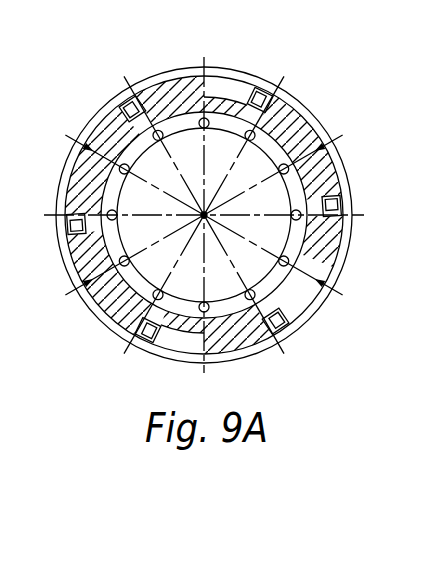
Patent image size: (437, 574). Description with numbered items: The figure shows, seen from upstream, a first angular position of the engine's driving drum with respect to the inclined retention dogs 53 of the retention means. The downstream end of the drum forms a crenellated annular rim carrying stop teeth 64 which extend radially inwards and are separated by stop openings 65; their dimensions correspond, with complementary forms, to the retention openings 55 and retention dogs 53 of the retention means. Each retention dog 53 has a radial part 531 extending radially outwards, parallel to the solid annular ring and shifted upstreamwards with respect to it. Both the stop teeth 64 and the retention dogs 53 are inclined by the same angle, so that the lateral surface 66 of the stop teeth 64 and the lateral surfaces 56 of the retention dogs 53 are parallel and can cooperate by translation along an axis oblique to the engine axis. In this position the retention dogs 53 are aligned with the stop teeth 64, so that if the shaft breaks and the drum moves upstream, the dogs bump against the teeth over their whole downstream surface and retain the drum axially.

The retention dogs 53 is at (168, 98).
The radial part 531 is at (283, 137).
The retention openings 55 is at (103, 132).
The lateral surfaces 56 is at (257, 106).
The stop teeth 64 is at (147, 87).
The stop openings 65 is at (223, 88).
The lateral surface 66 is at (170, 336).